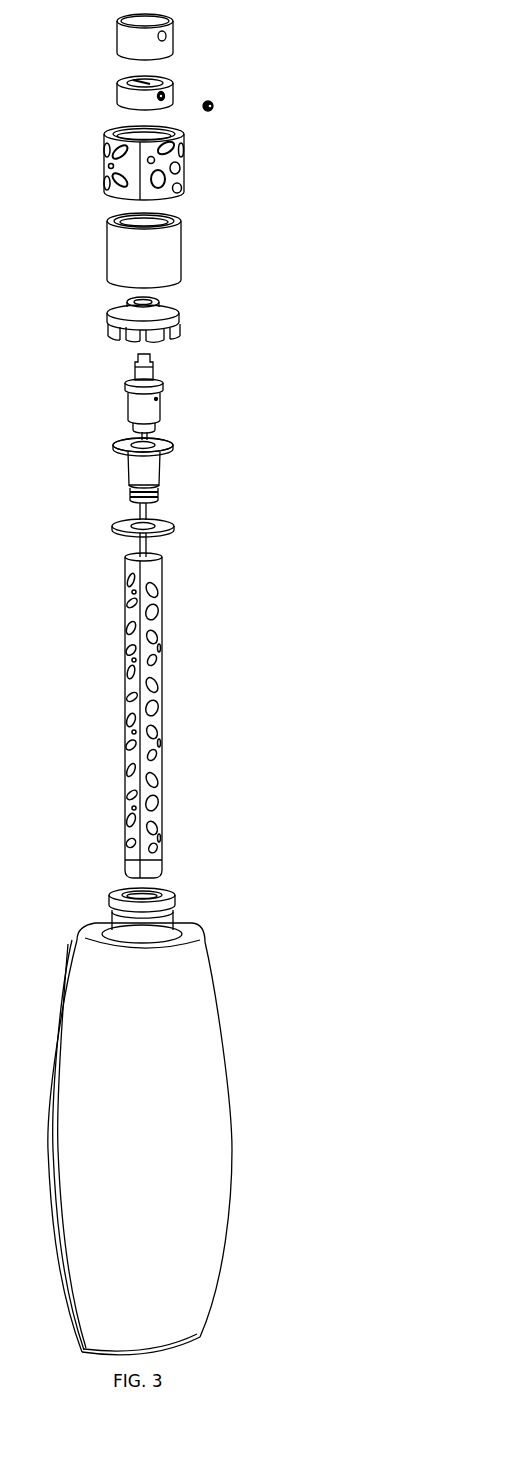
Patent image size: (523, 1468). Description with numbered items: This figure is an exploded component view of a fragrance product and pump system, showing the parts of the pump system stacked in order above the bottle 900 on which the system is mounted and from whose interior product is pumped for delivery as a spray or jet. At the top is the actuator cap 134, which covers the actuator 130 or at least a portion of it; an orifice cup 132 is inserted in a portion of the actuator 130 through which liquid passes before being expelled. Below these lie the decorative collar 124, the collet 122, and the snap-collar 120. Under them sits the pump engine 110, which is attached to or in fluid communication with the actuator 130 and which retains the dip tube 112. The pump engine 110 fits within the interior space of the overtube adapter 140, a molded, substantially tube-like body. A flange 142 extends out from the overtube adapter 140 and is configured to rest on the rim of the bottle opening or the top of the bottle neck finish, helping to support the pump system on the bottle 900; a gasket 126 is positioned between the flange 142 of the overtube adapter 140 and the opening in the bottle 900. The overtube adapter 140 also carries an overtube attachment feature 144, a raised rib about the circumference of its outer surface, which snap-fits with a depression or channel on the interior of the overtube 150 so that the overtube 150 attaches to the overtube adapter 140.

The actuator cap 134 is at (172, 41).
The actuator 130 is at (170, 84).
The orifice cup 132 is at (216, 105).
The decorative collar 124 is at (186, 162).
The collet 122 is at (170, 254).
The snap-collar 120 is at (177, 317).
The pump engine 110 is at (158, 386).
The dip tube 112 is at (175, 446).
The flange 142 is at (116, 443).
The overtube adapter 140 is at (137, 474).
The overtube attachment feature 144 is at (128, 497).
The gasket 126 is at (175, 526).
The overtube 150 is at (155, 573).
The bottle 900 is at (193, 985).